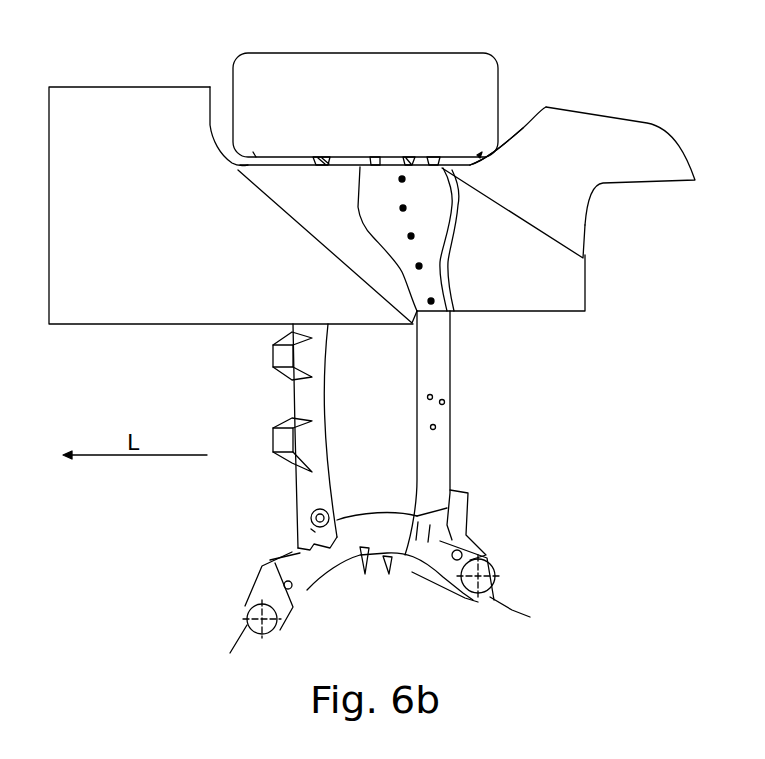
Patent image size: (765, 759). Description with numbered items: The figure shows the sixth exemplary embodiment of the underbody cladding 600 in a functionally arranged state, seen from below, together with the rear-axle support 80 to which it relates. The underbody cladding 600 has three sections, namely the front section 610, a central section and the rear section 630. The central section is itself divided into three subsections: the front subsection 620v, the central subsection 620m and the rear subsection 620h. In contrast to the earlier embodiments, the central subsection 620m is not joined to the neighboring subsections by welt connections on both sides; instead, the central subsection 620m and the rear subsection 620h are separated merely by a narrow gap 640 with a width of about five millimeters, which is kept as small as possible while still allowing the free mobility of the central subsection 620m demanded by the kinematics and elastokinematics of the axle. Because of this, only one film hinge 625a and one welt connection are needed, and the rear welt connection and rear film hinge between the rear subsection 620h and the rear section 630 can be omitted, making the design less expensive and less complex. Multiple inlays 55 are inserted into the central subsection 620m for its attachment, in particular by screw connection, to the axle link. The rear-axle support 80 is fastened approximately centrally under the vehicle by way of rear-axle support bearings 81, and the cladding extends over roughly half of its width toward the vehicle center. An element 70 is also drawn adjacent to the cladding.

The underbody cladding 600 is at (630, 121).
The front section 610 is at (160, 208).
The front subsection 620v is at (343, 206).
The rear subsection 620h is at (543, 275).
The central subsection 620m is at (435, 302).
The film hinge 625a is at (284, 207).
The rear section 630 is at (595, 167).
The gap 640 is at (458, 200).
The roof cross member module 70 is at (383, 116).
The inlays 55 is at (406, 207).
The rear-axle support 80 is at (437, 457).
The rear-axle support bearings 81 is at (245, 620).